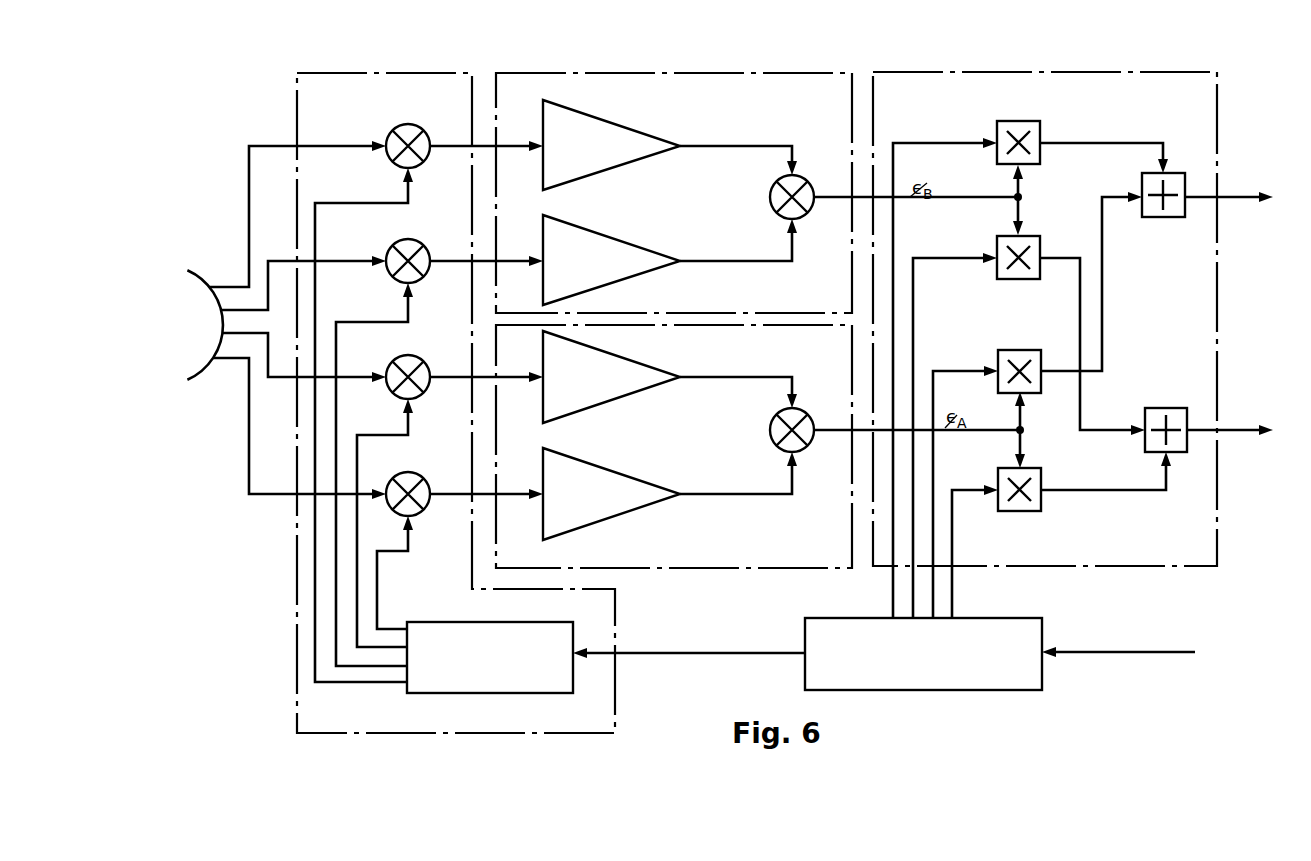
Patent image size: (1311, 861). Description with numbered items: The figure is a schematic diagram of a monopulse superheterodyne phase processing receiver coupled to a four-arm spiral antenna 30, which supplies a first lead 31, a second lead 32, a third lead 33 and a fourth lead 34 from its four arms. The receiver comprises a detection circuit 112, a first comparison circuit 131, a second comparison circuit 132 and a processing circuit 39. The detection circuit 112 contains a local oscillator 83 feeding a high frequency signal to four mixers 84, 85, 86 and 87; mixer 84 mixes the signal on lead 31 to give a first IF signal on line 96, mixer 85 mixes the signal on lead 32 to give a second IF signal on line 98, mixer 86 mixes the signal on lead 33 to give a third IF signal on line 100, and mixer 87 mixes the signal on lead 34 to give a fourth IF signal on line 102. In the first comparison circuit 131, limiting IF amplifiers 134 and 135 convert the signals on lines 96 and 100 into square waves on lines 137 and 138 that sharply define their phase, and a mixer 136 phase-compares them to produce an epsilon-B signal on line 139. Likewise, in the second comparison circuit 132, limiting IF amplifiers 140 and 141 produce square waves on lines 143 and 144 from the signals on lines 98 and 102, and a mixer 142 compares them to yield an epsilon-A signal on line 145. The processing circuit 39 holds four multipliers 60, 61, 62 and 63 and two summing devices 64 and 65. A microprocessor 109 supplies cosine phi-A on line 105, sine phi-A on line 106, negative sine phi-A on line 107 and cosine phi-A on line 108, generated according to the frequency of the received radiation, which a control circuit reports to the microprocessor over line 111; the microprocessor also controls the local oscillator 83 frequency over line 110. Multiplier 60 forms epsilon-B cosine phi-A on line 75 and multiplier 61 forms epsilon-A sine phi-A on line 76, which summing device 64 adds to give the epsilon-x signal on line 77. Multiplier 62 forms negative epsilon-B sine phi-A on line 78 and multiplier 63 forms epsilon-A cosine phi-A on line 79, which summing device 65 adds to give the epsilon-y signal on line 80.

The four-arm spiral antenna 30 is at (199, 266).
The first lead 31 is at (267, 287).
The second lead 32 is at (226, 361).
The third lead 33 is at (236, 286).
The fourth lead 34 is at (267, 360).
The processing circuit 39 is at (1100, 72).
The multiplier 60 is at (1027, 120).
The multiplier 61 is at (1019, 350).
The multiplier 62 is at (1023, 236).
The multiplier 63 is at (1037, 468).
The summing device 64 is at (1163, 217).
The summing device 65 is at (1161, 408).
The line 75 is at (1096, 142).
The line 76 is at (1106, 352).
The line 77 is at (1232, 198).
The line 78 is at (1079, 280).
The line 79 is at (1076, 489).
The line 80 is at (1226, 428).
The local oscillator 83 is at (538, 622).
The mixer 84 is at (410, 241).
The mixer 85 is at (413, 473).
The mixer 86 is at (410, 126).
The mixer 87 is at (413, 356).
The line 96 is at (455, 265).
The line 98 is at (455, 498).
The line 100 is at (455, 150).
The line 102 is at (448, 382).
The line 105 is at (893, 592).
The line 106 is at (935, 581).
The line 107 is at (911, 569).
The line 108 is at (953, 600).
The microprocessor 109 is at (1045, 633).
The line 110 is at (670, 652).
The line 111 is at (1168, 652).
The detection circuit 112 is at (406, 73).
The first comparison circuit 131 is at (730, 73).
The second comparison circuit 132 is at (718, 568).
The limiting IF amplifier 134 is at (622, 247).
The limiting IF amplifier 135 is at (614, 121).
The mixer 136 is at (770, 192).
The line 137 is at (711, 260).
The line 138 is at (726, 144).
The line 139 is at (838, 205).
The limiting IF amplifier 140 is at (623, 473).
The limiting IF amplifier 141 is at (641, 366).
The mixer 142 is at (770, 426).
The line 143 is at (708, 494).
The line 144 is at (719, 377).
The line 145 is at (838, 438).